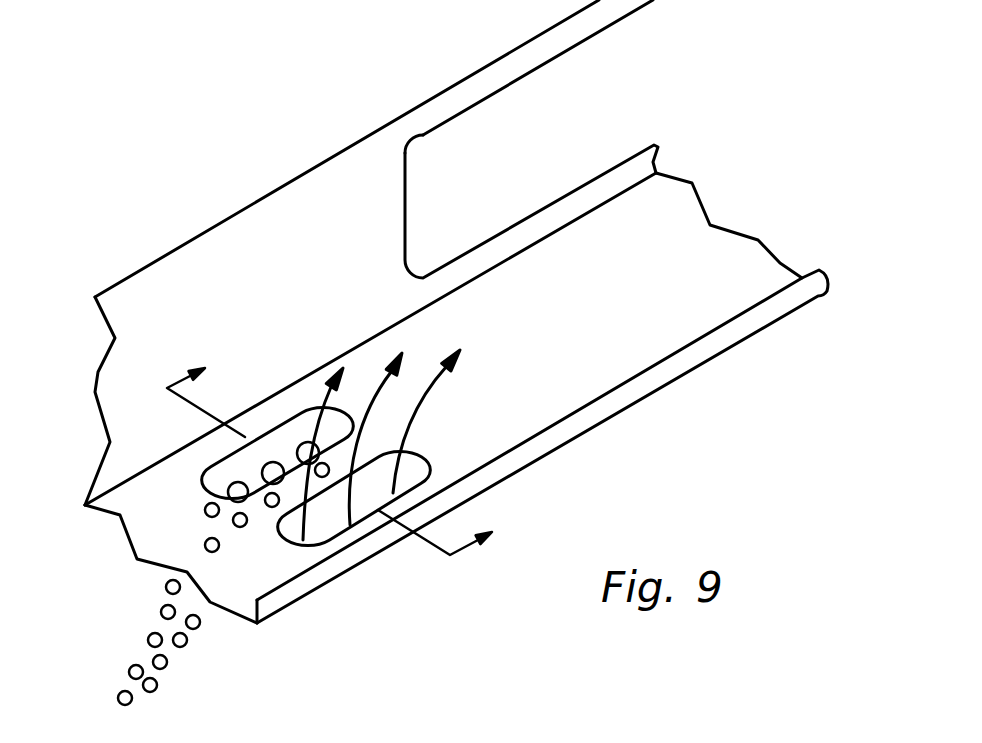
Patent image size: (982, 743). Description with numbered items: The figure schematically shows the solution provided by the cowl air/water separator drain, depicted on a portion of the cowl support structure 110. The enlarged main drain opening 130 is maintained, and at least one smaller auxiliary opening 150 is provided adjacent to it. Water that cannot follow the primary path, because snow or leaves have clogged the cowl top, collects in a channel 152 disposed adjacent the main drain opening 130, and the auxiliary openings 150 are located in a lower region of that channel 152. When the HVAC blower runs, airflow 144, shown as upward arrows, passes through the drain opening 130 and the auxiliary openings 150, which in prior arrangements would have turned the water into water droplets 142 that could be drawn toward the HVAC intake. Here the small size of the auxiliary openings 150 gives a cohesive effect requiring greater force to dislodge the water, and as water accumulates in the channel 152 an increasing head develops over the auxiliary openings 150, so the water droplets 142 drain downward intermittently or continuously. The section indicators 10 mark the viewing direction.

The cowl support structure 110 is at (722, 262).
The drain opening 130 is at (320, 520).
The water droplets 142 is at (166, 587).
The airflow 144 is at (366, 408).
The auxiliary openings 150 is at (271, 462).
The channel 152 is at (237, 466).
The section view indicator 10 is at (347, 446).